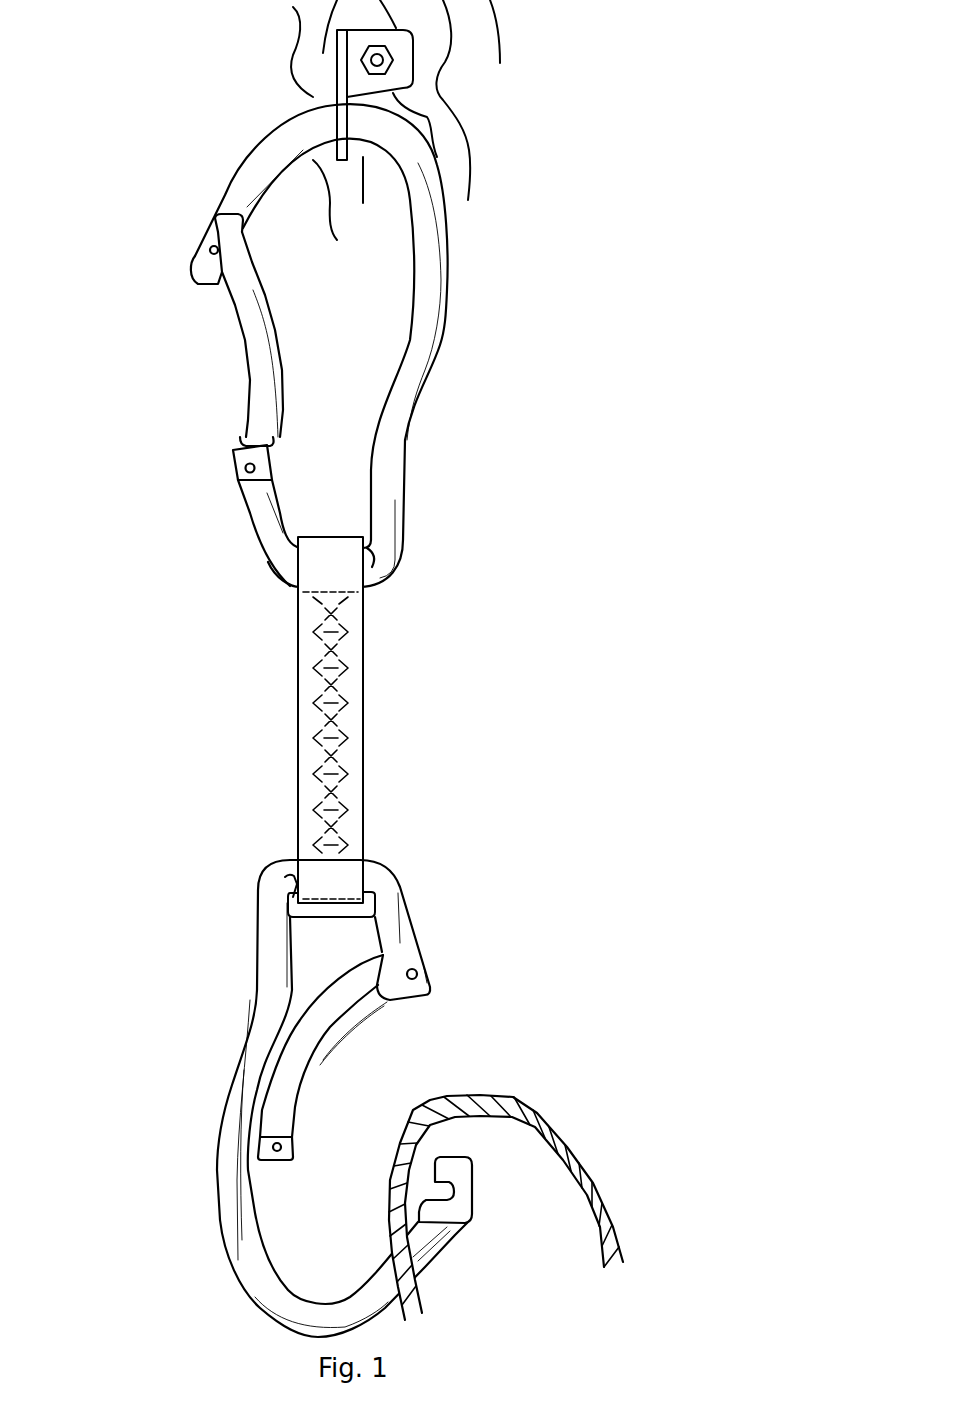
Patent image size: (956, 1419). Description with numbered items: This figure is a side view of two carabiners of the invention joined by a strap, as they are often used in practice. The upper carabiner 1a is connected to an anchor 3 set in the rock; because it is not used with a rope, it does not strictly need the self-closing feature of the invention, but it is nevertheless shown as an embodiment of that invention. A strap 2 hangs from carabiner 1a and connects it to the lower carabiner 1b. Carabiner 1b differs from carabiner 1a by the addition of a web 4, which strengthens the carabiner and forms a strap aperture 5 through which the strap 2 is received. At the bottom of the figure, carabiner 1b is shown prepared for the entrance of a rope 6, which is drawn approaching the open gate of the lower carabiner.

The carabiner 1a is at (450, 287).
The carabiner 1b is at (230, 1073).
The strap 2 is at (367, 687).
The anchor 3 is at (413, 60).
The web 4 is at (337, 945).
The strap aperture 5 is at (300, 912).
The rope 6 is at (547, 1115).